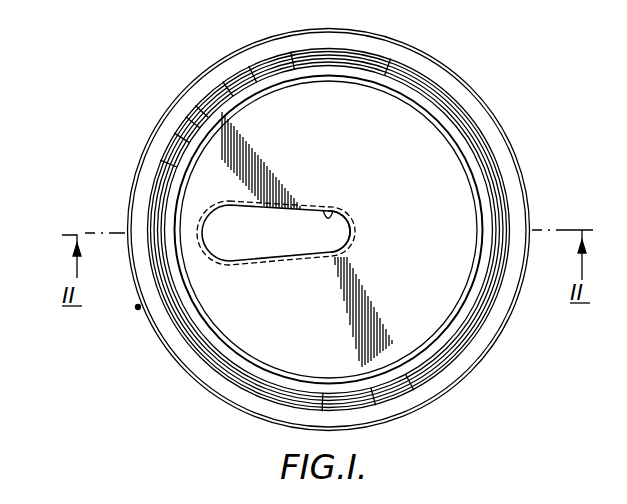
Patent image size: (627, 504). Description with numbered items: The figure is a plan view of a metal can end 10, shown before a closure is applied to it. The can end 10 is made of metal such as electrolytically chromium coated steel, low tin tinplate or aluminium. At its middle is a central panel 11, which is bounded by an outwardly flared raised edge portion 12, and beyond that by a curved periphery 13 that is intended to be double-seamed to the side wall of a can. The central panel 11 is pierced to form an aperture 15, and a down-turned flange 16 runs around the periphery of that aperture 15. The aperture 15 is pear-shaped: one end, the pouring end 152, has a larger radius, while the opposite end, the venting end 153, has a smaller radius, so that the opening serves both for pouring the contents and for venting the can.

The can end 10 is at (138, 147).
The central panel 11 is at (332, 138).
The outwardly flared raised edge portion 12 is at (448, 112).
The curved periphery 13 is at (490, 130).
The aperture 15 is at (329, 212).
The down-turned flange 16 is at (297, 204).
The pouring end 152 is at (205, 257).
The venting end 153 is at (350, 246).